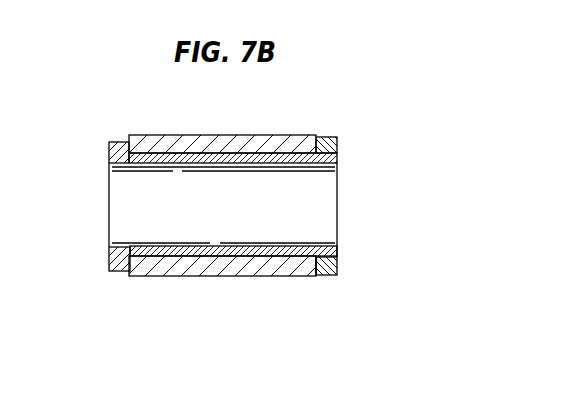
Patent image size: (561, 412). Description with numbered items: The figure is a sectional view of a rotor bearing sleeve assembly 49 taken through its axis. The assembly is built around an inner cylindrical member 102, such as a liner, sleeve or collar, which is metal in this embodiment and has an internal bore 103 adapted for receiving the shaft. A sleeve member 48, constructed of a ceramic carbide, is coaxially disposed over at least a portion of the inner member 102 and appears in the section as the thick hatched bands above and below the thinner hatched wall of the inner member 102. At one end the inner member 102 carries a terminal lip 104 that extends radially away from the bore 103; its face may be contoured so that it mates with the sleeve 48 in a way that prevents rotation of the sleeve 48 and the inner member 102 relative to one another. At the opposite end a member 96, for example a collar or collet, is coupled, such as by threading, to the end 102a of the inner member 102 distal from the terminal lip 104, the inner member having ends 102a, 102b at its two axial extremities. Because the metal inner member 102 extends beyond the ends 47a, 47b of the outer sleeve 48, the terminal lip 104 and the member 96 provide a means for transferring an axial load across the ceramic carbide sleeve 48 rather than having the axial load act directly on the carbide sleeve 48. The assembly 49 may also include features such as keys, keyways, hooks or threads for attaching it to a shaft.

The sleeve member 48 is at (185, 135).
The bearing sleeve assembly 49 is at (268, 113).
The member 96 is at (332, 136).
The inner cylindrical member 102 is at (112, 173).
The end of inner member 102a is at (108, 249).
The end of inner member 102b is at (338, 251).
The internal bore 103 is at (243, 219).
The terminal lip 104 is at (120, 141).
The end of outer sleeve 47a is at (127, 276).
The end of outer sleeve 47b is at (330, 276).